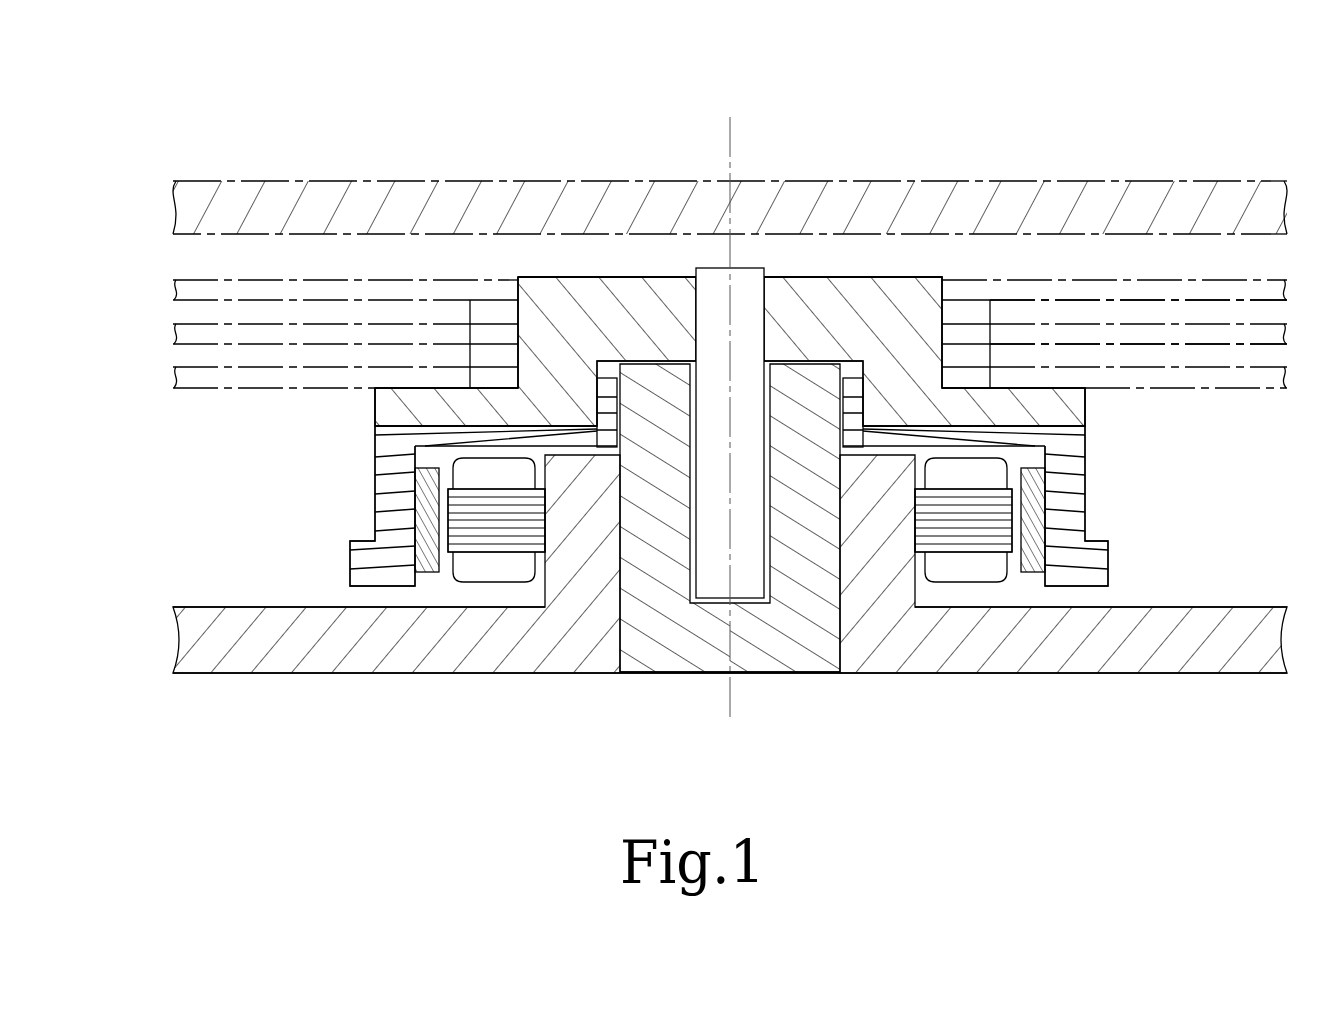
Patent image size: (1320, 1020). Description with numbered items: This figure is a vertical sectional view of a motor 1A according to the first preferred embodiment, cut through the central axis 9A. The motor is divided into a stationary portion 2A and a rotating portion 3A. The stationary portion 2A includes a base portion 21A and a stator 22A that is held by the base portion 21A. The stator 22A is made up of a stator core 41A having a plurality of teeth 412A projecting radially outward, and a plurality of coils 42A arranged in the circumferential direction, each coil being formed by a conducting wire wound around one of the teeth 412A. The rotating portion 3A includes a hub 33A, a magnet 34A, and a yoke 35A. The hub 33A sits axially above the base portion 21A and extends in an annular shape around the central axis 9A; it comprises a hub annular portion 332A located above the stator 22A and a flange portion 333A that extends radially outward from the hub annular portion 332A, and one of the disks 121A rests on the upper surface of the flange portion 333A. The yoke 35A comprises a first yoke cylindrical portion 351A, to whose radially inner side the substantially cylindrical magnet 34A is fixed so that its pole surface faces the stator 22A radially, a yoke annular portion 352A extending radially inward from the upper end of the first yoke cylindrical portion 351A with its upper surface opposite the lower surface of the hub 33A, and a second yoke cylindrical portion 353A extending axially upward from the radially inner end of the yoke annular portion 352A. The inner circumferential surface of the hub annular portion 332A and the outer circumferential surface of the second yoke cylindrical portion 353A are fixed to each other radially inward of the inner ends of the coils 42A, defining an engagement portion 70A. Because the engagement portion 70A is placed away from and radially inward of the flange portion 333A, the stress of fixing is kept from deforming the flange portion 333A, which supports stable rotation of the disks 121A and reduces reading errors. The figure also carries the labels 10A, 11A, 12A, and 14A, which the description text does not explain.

The spindle motor 1A is at (778, 142).
The stationary portion 2A is at (600, 677).
The rotating portion 3A is at (828, 258).
The central axis 9A is at (729, 160).
The disk 10A is at (268, 160).
The rotor hub 11A is at (649, 257).
The disk 12A is at (1138, 322).
The disks 121A is at (1113, 333).
The clamper 14A is at (1237, 215).
The base portion 21A is at (1215, 640).
The stator 22A is at (1055, 752).
The hub 33A is at (540, 104).
The hub annular portion 332A is at (577, 333).
The flange portion 333A is at (470, 407).
The magnet 34A is at (1033, 562).
The yoke 35A is at (485, 752).
The first yoke cylindrical portion 351A is at (390, 500).
The yoke annular portion 352A is at (498, 438).
The second yoke cylindrical portion 353A is at (607, 420).
The stator core 41A is at (975, 527).
The teeth 412A is at (950, 527).
The coils 42A is at (992, 560).
The engagement portion 70A is at (865, 405).